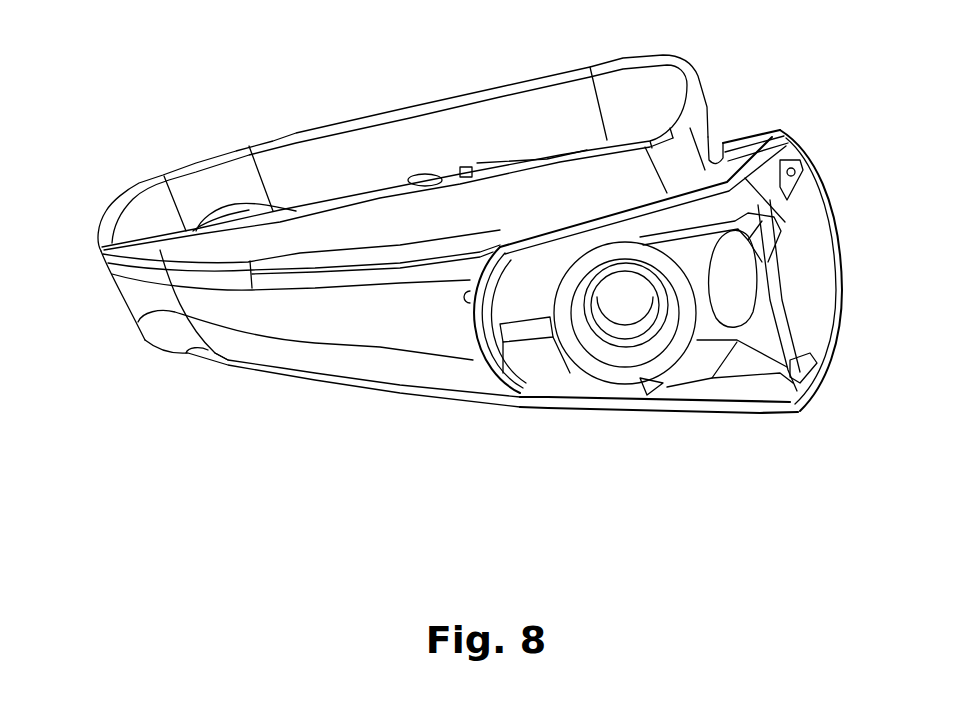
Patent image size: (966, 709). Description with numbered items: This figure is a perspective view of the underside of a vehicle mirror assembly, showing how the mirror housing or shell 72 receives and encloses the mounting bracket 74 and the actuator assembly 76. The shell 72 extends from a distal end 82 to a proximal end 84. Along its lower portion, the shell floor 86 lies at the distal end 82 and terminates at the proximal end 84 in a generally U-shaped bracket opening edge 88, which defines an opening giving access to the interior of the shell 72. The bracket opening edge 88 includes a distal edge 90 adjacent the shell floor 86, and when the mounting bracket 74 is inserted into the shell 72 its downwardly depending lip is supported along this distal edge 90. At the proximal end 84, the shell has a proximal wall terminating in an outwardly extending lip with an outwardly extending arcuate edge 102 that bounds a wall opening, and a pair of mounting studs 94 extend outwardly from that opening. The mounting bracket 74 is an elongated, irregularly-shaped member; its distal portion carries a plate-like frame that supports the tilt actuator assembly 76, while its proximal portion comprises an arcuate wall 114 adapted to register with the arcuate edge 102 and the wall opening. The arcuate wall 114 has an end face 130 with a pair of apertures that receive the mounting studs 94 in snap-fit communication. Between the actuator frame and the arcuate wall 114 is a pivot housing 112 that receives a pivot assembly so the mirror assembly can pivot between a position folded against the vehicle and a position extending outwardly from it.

The mirror housing or shell 72 is at (323, 173).
The mounting bracket 74 is at (787, 277).
The actuator assembly 76 is at (430, 173).
The distal end 82 is at (162, 298).
The proximal end 84 is at (751, 104).
The shell floor 86 is at (380, 328).
The bracket opening edge 88 is at (665, 405).
The distal edge 90 is at (510, 347).
The mounting stud 94 is at (800, 157).
The arcuate edge 102 is at (823, 190).
The pivot housing 112 is at (563, 360).
The arcuate wall 114 is at (807, 333).
The end face 130 is at (833, 300).